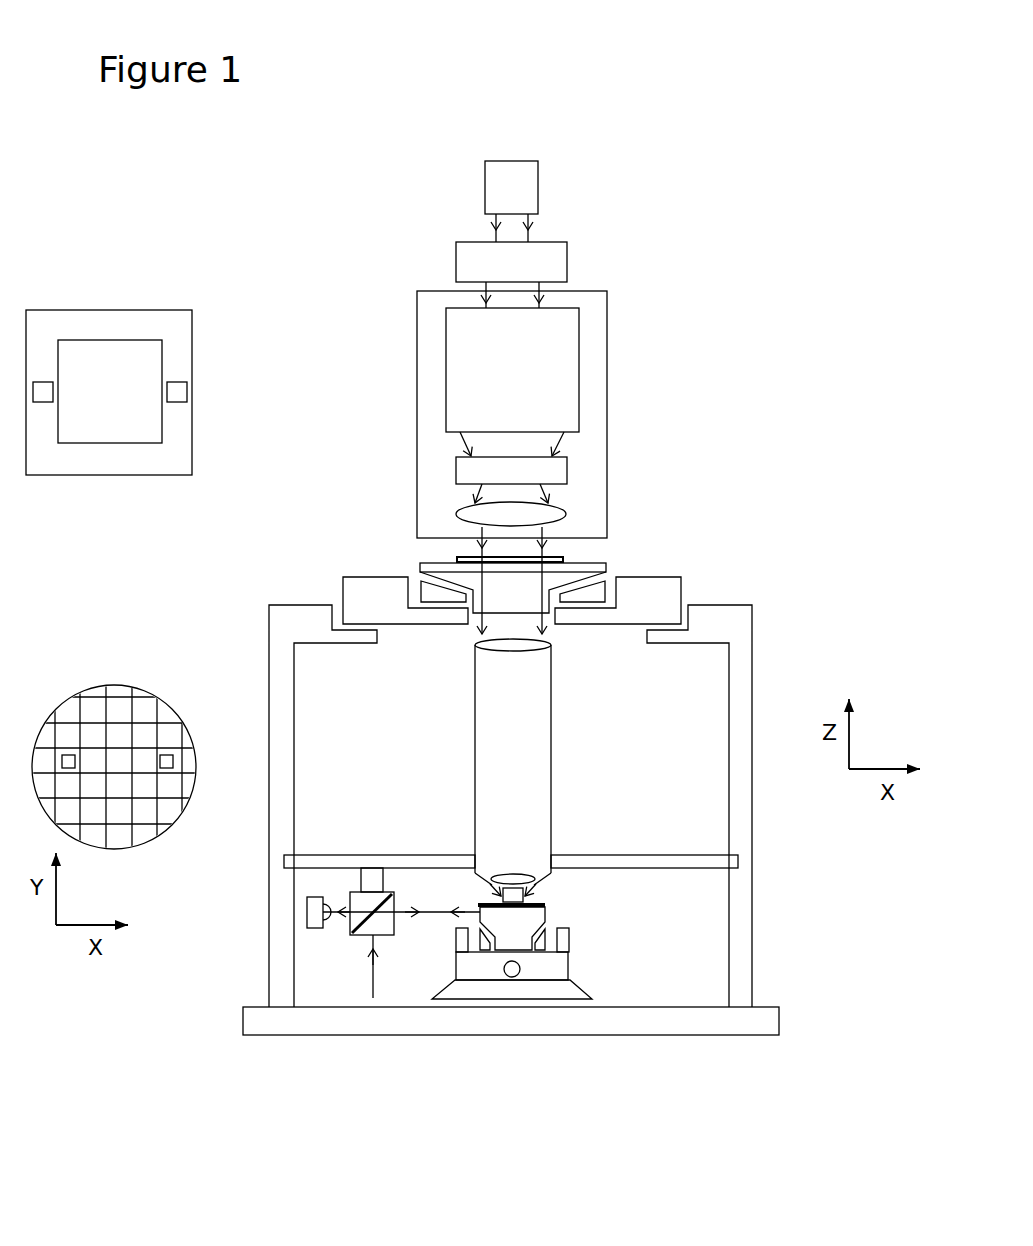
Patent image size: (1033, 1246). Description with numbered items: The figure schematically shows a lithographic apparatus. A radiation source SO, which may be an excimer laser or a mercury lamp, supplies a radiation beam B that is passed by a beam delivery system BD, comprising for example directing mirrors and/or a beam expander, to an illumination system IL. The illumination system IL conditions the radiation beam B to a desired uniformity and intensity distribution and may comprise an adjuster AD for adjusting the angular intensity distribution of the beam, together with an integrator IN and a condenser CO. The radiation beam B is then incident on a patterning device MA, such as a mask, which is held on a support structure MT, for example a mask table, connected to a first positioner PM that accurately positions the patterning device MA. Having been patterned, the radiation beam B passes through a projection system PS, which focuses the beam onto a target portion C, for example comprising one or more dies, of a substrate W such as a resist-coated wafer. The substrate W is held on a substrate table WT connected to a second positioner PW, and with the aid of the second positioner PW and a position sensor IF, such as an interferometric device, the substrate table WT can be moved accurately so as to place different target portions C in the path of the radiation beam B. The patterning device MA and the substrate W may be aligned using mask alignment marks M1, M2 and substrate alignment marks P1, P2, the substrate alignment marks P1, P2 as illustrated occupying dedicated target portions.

The radiation source SO is at (540, 193).
The beam delivery system BD is at (568, 270).
The illumination system IL is at (607, 326).
The adjuster AD is at (580, 382).
The integrator IN is at (568, 467).
The condenser CO is at (567, 515).
The radiation beam B is at (514, 548).
The patterning device MA is at (203, 420).
The support structure MT is at (607, 572).
The first positioner PM is at (343, 577).
The mask alignment mark M1 is at (180, 382).
The mask alignment mark M2 is at (38, 382).
The projection system PS is at (551, 740).
The substrate W is at (203, 758).
The substrate table WT is at (548, 912).
The second positioner PW is at (566, 971).
The position sensor IF is at (344, 939).
The substrate alignment mark P1 is at (68, 755).
The substrate alignment mark P2 is at (167, 755).
The target portion C is at (118, 748).